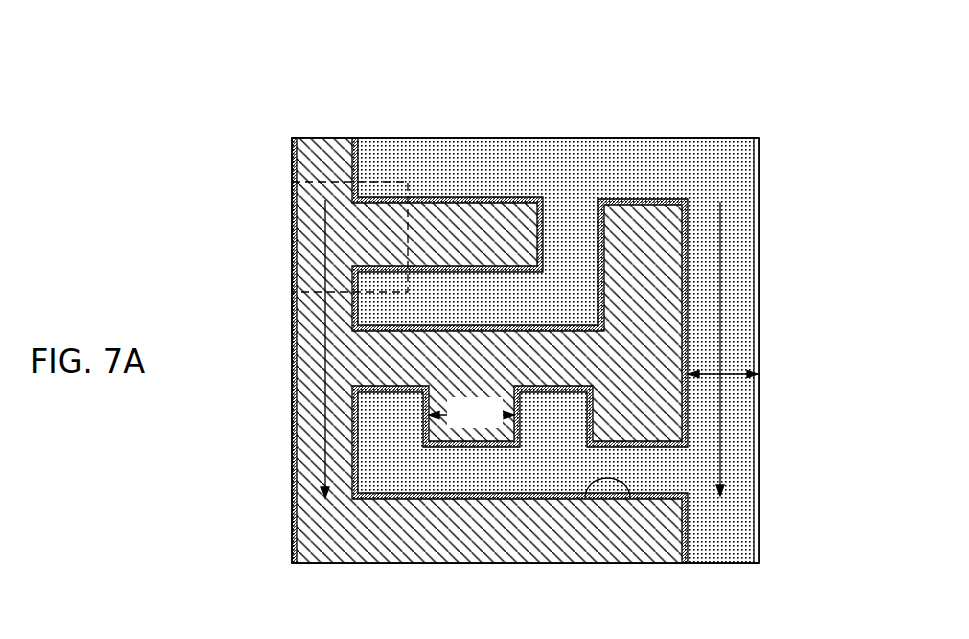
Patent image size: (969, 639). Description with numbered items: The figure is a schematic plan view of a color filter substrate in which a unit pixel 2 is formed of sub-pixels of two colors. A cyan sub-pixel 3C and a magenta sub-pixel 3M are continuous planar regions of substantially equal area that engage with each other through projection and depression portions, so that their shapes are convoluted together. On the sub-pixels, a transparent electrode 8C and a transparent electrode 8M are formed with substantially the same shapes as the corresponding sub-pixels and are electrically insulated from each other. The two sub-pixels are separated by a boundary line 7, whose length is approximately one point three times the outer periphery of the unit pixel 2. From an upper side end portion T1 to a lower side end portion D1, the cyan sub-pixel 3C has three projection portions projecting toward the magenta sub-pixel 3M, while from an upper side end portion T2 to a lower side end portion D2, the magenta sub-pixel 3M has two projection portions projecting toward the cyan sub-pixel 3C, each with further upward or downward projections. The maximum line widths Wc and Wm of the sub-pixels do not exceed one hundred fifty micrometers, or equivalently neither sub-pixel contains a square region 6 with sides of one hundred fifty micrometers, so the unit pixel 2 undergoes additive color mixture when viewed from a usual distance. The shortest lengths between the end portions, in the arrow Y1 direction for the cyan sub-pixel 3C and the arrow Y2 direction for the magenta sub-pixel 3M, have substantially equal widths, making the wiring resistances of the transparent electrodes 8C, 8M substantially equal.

The unit pixel 2 is at (660, 80).
The cyan sub-pixel 3C is at (292, 333).
The magenta sub-pixel 3M is at (757, 262).
The square region 6 is at (292, 194).
The boundary line 7 is at (585, 498).
The transparent electrode 8C is at (313, 379).
The transparent electrode 8M is at (740, 215).
The upper side end portion T1 is at (330, 138).
The upper side end portion T2 is at (718, 138).
The lower side end portion D1 is at (320, 565).
The lower side end portion D2 is at (728, 565).
The arrow Y1 direction Y1 is at (320, 430).
The arrow Y2 direction Y2 is at (720, 427).
The maximum line width Wm is at (752, 374).
The maximum line width Wc is at (471, 412).